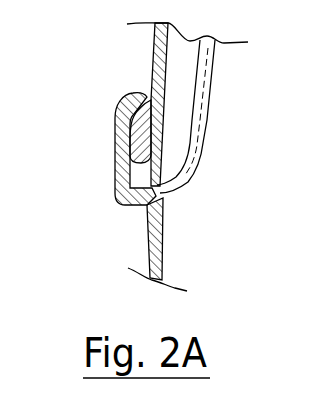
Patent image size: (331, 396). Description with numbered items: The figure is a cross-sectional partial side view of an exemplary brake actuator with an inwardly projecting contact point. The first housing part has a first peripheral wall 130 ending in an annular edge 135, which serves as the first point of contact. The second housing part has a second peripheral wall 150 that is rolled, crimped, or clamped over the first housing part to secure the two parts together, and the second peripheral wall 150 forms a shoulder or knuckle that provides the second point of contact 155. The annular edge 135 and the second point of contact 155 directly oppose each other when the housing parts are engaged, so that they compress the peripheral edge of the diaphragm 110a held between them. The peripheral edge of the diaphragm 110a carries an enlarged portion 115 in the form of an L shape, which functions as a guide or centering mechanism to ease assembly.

The first peripheral wall 130 is at (113, 104).
The diaphragm 110a is at (232, 116).
The second peripheral wall 150 is at (88, 149).
The annular edge 135 is at (208, 169).
The enlarged portion 115 is at (102, 201).
The second point of contact 155 is at (127, 244).